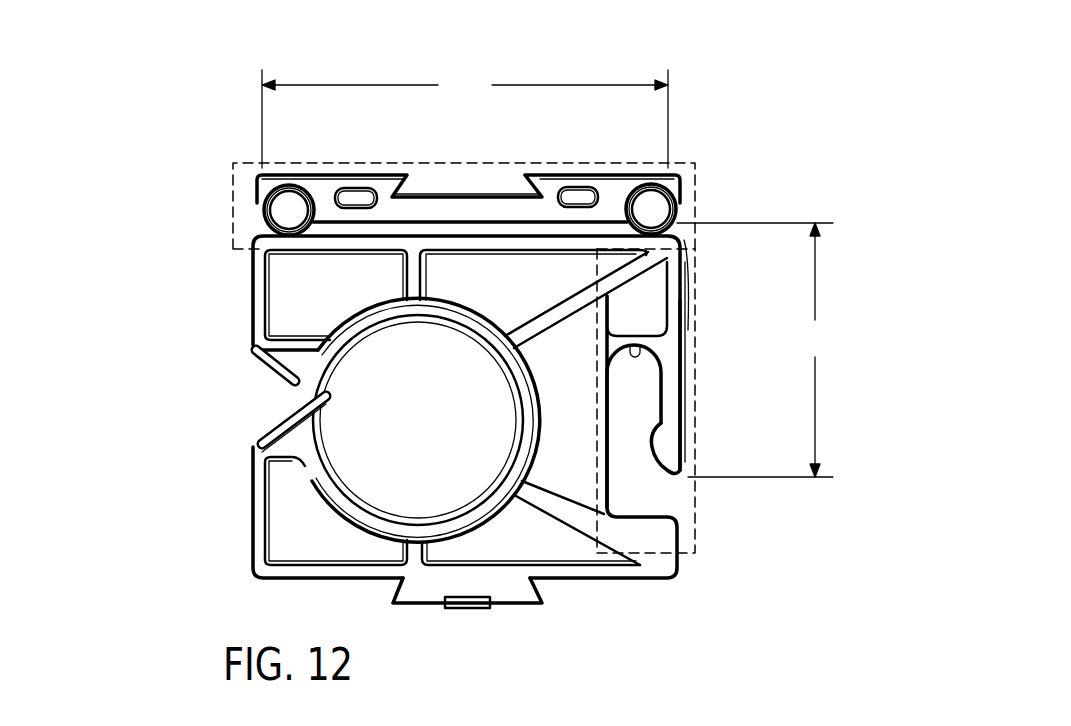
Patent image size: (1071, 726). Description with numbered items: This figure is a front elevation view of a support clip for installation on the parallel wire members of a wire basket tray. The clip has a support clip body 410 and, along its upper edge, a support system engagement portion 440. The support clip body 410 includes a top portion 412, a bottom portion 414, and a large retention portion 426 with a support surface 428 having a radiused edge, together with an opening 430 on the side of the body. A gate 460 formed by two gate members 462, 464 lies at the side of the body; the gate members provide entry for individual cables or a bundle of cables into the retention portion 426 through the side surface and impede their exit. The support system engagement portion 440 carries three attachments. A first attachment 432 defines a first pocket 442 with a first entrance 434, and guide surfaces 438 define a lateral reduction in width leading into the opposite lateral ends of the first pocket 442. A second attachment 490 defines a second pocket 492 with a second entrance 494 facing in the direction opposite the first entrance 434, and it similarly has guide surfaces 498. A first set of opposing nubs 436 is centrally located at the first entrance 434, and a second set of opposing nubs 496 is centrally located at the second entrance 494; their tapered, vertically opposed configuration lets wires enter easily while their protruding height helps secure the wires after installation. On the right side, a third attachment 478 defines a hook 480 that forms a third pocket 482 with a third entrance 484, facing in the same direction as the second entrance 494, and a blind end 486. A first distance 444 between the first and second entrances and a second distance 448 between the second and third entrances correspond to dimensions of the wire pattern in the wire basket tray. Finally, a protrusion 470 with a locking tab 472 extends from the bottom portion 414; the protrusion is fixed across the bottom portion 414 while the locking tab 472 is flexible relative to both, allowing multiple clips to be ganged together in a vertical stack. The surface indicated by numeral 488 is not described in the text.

The support clip body 410 is at (228, 478).
The top portion 412 is at (287, 255).
The bottom portion 414 is at (282, 579).
The retention portion 426 is at (334, 508).
The support surface 428 is at (396, 526).
The opening 430 is at (242, 418).
The first attachment 432 is at (243, 140).
The first entrance 434 is at (262, 196).
The first set of opposing nubs 436 is at (262, 228).
The guide surfaces 438 is at (334, 185).
The support system engagement portion 440 is at (236, 165).
The first pocket 442 is at (300, 187).
The first distance 444 is at (465, 86).
The second distance 448 is at (757, 350).
The gate 460 is at (193, 345).
The gate member 462 is at (306, 425).
The gate member 464 is at (280, 378).
The protrusion 470 is at (510, 606).
The locking tab 472 is at (456, 611).
The third attachment 478 is at (704, 401).
The hook 480 is at (670, 423).
The third pocket 482 is at (664, 388).
The third entrance 484 is at (670, 480).
The blind end 486 is at (637, 350).
The outer wall surface 488 is at (689, 330).
The second attachment 490 is at (748, 112).
The second pocket 492 is at (653, 187).
The second entrance 494 is at (680, 184).
The second set of opposing nubs 496 is at (678, 220).
The guide surfaces 498 is at (606, 186).